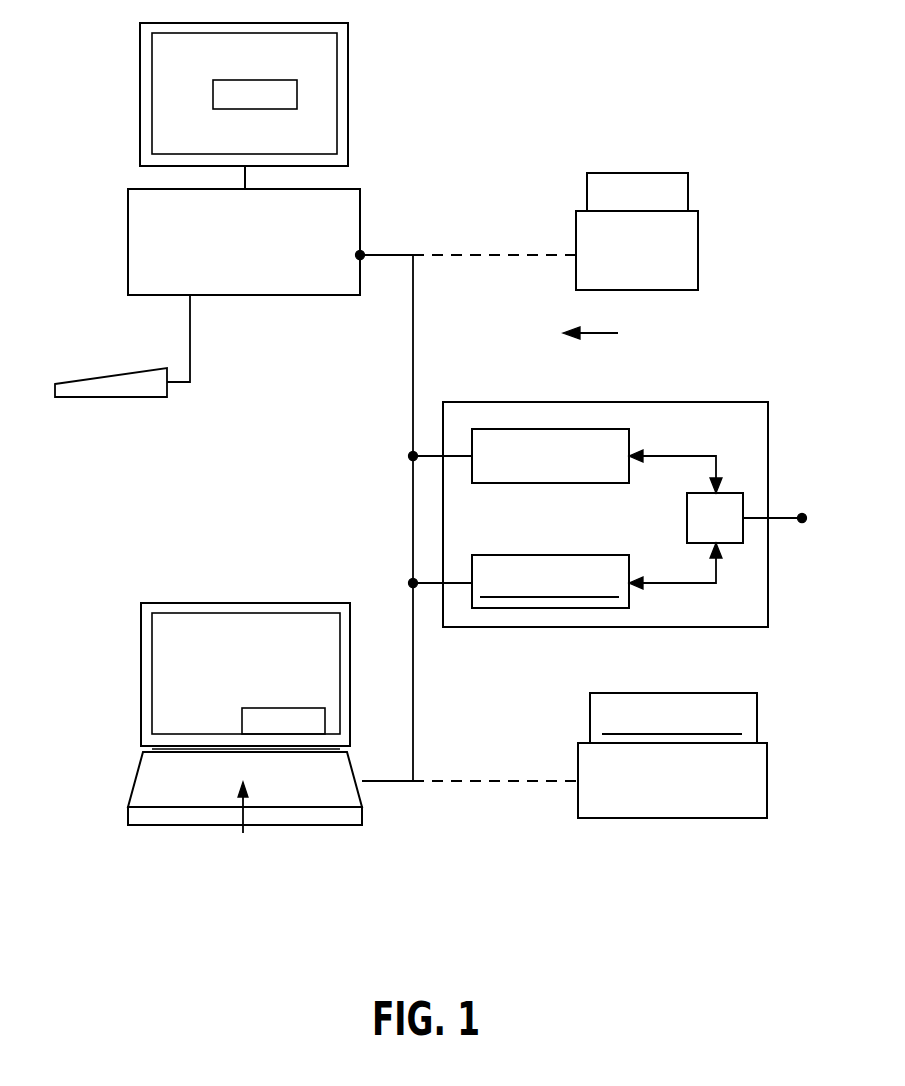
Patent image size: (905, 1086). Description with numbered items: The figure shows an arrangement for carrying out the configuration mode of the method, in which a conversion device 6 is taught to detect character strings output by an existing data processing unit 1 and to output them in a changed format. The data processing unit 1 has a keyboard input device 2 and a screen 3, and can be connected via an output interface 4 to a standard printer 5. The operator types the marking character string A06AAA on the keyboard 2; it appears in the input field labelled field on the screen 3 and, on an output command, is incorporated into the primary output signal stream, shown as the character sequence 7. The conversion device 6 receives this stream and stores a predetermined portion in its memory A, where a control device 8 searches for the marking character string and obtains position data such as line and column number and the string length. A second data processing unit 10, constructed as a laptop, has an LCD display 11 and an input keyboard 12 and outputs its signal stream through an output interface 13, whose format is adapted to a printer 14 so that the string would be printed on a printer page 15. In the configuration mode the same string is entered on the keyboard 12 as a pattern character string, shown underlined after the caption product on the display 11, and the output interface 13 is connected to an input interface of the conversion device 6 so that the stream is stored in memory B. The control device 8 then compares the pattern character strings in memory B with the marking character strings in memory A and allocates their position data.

The data processing unit 1 is at (128, 230).
The keyboard input device 2 is at (118, 398).
The screen 3 is at (140, 67).
The output interface 4 is at (363, 253).
The standard printer 5 is at (698, 240).
The conversion device 6 is at (517, 627).
The character sequence 7 is at (543, 335).
The control device 8 is at (687, 518).
The second data processing unit 10 is at (214, 708).
The LCD display 11 is at (141, 678).
The input keyboard 12 is at (135, 772).
The output interface 13 is at (362, 783).
The printer 14 is at (715, 818).
The printer page 15 is at (757, 713).